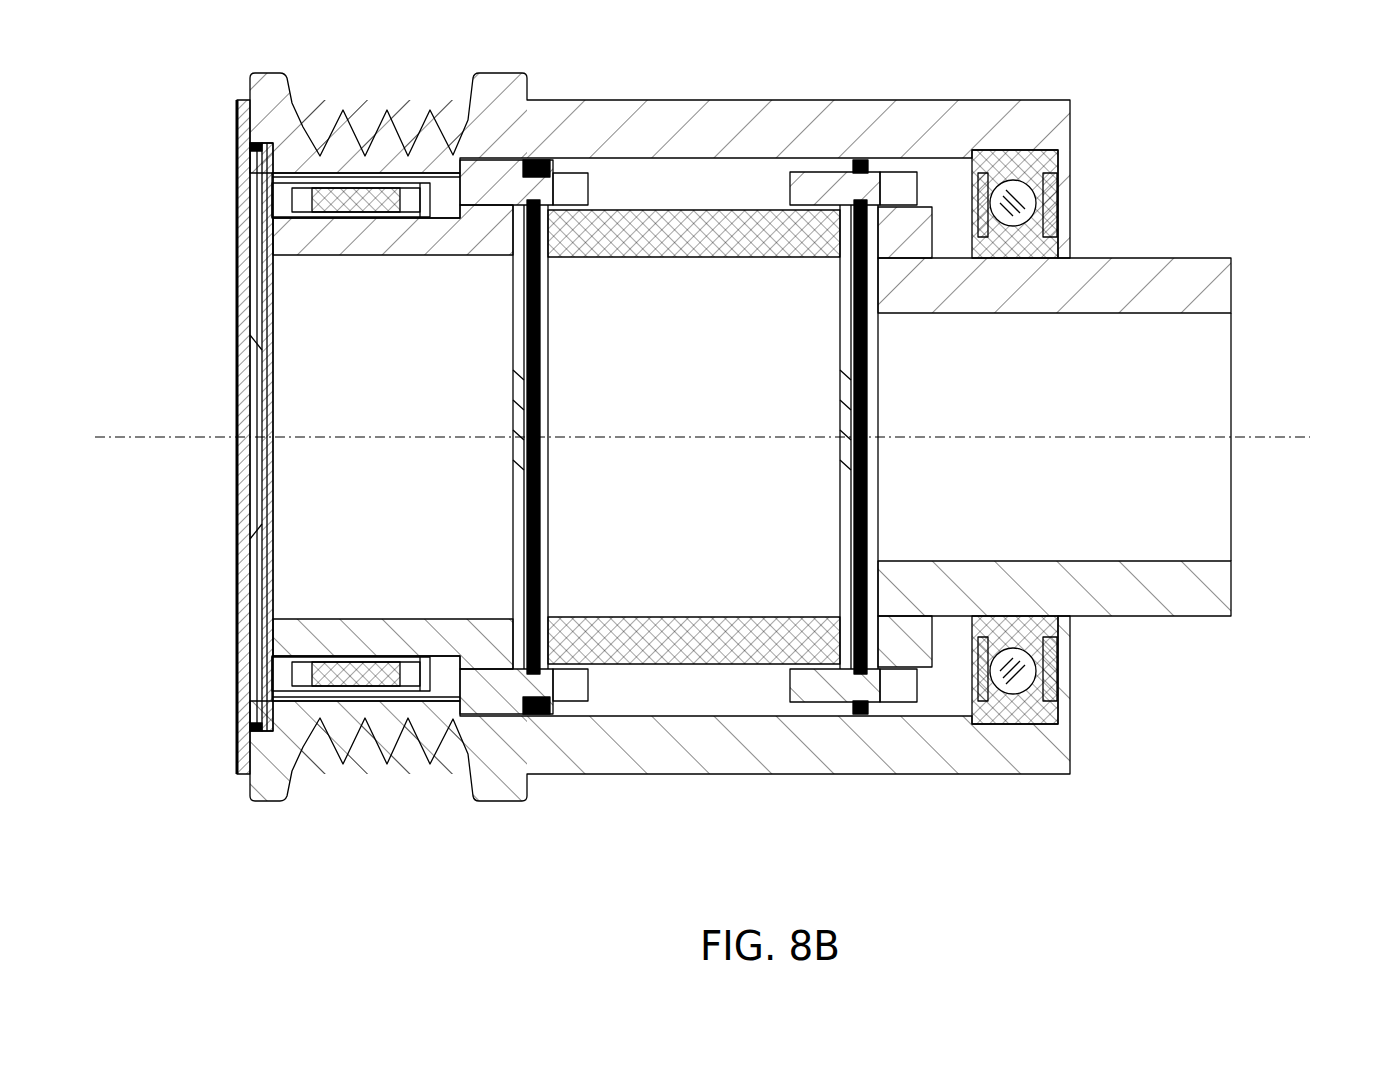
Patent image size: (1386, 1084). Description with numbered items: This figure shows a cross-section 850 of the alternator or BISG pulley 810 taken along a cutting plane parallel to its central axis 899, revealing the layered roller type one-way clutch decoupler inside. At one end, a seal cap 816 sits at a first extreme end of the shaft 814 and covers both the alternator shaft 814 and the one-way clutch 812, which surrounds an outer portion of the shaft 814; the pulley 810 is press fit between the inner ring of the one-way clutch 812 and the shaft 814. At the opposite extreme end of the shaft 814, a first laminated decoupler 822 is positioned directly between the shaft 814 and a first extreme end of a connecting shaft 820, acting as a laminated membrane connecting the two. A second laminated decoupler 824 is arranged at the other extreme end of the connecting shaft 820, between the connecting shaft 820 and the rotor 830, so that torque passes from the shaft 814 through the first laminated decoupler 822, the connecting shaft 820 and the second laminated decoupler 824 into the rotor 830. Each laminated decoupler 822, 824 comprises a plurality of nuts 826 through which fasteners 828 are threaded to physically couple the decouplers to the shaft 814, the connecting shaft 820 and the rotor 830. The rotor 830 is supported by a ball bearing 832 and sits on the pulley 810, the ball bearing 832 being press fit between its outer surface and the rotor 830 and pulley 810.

The pulley 810 is at (1020, 100).
The one-way clutch 812 is at (373, 217).
The shaft 814 is at (438, 256).
The seal cap 816 is at (253, 283).
The connecting shaft 820 is at (728, 345).
The first laminated decoupler 822 is at (538, 388).
The second laminated decoupler 824 is at (852, 572).
The nuts 826 is at (873, 703).
The fasteners 828 is at (503, 697).
The rotor 830 is at (1205, 257).
The ball bearing 832 is at (1060, 702).
The cross-section 850 is at (1302, 94).
The central axis 899 is at (172, 436).